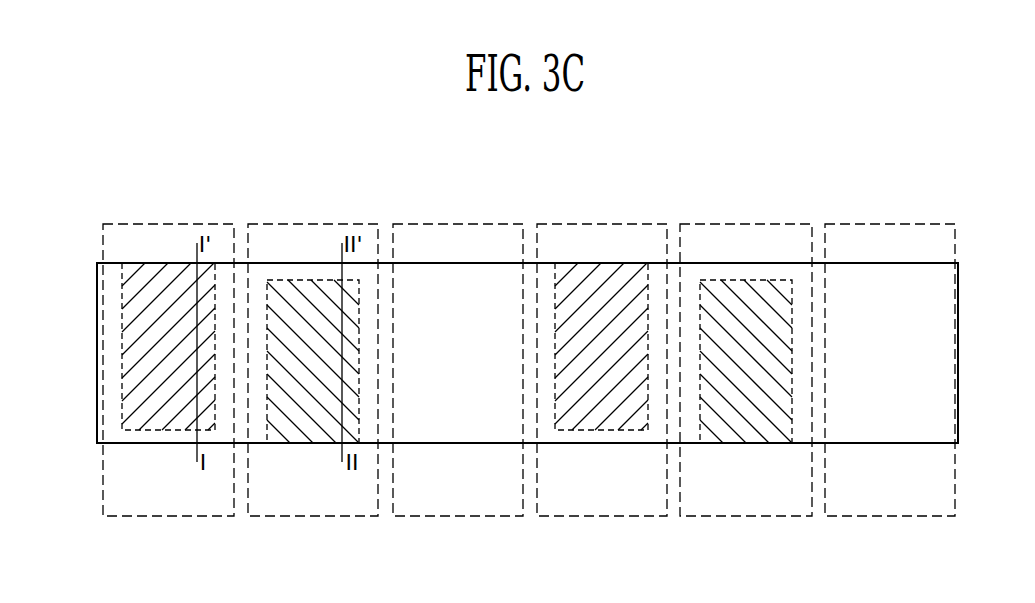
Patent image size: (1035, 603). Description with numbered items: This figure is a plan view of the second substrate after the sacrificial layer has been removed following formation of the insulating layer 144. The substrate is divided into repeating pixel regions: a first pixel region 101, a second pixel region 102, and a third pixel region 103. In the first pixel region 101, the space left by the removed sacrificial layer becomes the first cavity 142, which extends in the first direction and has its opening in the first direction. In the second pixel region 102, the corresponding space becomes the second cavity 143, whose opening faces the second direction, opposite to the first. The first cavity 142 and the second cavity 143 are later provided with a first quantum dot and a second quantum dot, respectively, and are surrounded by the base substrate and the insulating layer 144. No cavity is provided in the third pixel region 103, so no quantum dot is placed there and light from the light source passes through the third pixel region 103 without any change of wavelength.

The first pixel region 101 is at (171, 516).
The second pixel region 102 is at (313, 516).
The third pixel region 103 is at (458, 516).
The first cavity 142 is at (167, 263).
The second cavity 143 is at (290, 280).
The insulating layer 144 is at (460, 263).